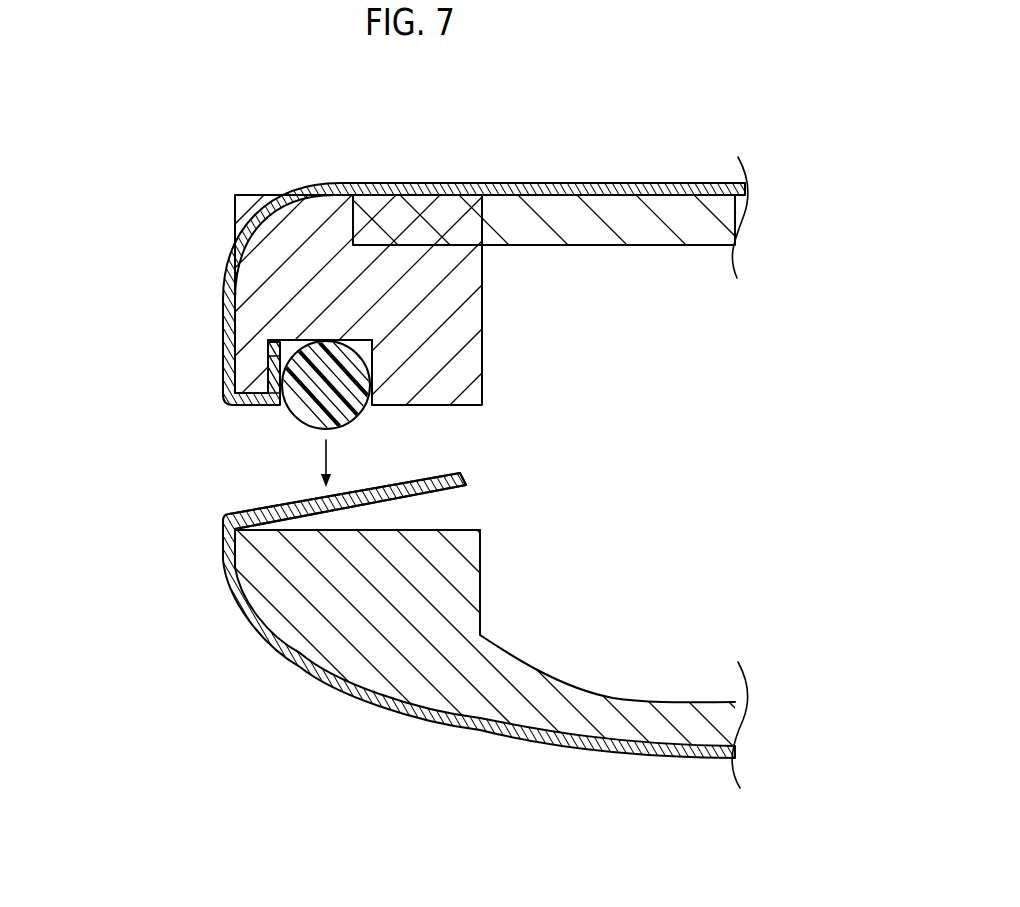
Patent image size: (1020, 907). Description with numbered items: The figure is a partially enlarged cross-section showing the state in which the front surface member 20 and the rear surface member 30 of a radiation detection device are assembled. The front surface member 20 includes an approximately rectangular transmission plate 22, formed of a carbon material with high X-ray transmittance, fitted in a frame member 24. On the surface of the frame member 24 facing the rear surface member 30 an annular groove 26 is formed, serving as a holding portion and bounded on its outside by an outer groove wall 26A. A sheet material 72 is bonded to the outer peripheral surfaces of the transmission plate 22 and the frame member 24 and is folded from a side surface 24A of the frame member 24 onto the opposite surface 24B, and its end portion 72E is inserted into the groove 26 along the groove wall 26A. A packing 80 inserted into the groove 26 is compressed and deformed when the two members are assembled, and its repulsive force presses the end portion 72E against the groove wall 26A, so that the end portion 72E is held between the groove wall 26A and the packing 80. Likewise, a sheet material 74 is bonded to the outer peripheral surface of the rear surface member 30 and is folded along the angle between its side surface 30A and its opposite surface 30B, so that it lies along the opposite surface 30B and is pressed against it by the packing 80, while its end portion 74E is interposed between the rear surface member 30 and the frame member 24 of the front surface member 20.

The front surface member 20 is at (317, 112).
The transmission plate 22 is at (482, 188).
The frame member 24 is at (316, 182).
The side surface 24A is at (225, 360).
The opposite surface 24B is at (249, 402).
The groove 26 is at (372, 366).
The outer groove wall 26A is at (298, 372).
The rear surface member 30 is at (546, 742).
The side surface 30A is at (235, 562).
The opposite surface 30B is at (450, 530).
The sheet material 72 is at (644, 184).
The end portion 72E is at (270, 341).
The sheet material 74 is at (404, 715).
The end portion 74E is at (466, 481).
The packing 80 is at (360, 412).